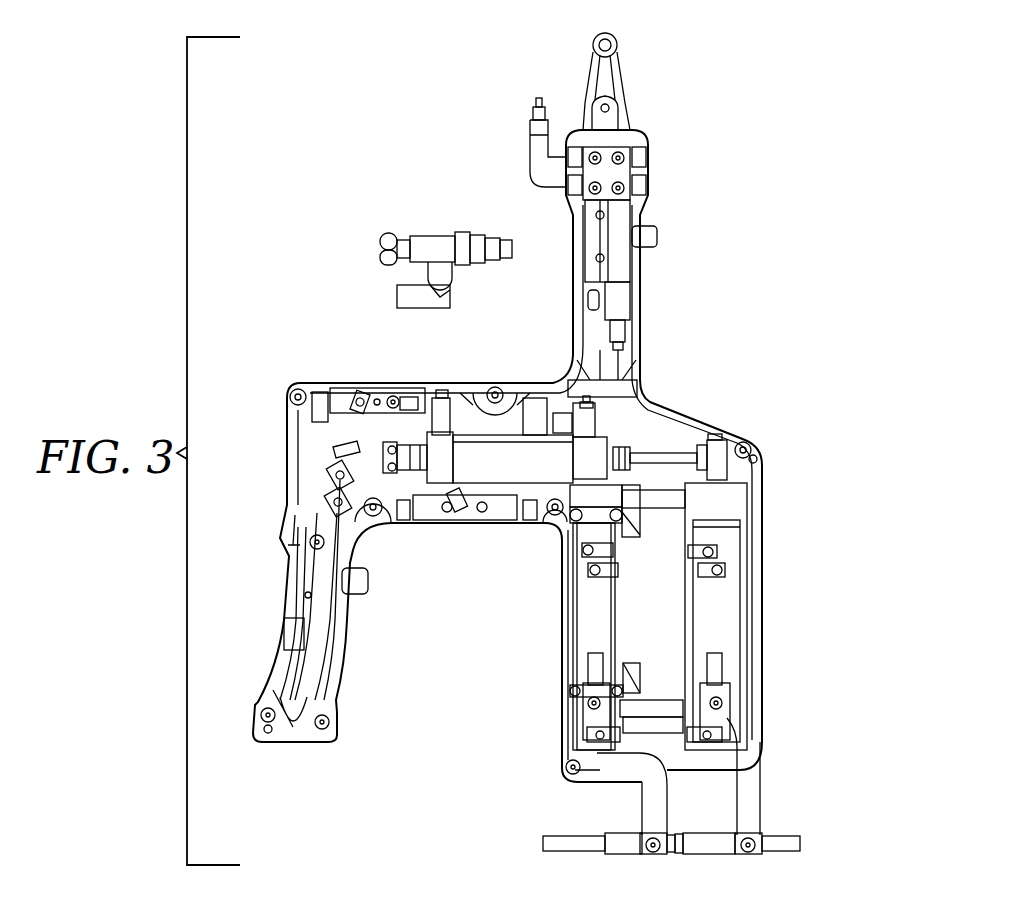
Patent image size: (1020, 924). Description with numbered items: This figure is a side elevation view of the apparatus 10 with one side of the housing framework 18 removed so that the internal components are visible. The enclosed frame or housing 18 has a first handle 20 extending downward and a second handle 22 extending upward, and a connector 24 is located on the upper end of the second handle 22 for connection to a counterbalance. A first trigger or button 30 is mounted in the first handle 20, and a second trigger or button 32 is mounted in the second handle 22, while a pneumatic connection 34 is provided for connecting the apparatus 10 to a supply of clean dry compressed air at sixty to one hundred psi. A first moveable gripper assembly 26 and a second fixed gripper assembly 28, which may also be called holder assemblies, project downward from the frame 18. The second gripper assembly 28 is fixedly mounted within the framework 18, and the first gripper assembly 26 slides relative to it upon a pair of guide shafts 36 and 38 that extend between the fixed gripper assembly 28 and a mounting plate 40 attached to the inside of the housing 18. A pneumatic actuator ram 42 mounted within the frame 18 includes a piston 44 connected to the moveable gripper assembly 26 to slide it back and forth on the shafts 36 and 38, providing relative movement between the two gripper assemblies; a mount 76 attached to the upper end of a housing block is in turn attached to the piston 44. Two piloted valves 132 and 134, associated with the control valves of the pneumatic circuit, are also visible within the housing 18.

The apparatus 10 is at (720, 126).
The frame or housing 18 is at (312, 386).
The first handle 20 is at (283, 628).
The second handle 22 is at (642, 273).
The connector 24 is at (622, 72).
The first moveable gripper assembly 26 is at (761, 789).
The second fixed gripper assembly 28 is at (641, 811).
The first trigger or button 30 is at (358, 583).
The second trigger or button 32 is at (658, 236).
The pneumatic connection 34 is at (528, 160).
The guide shaft 36 is at (664, 457).
The guide shaft 38 is at (645, 702).
The mounting plate 40 is at (754, 586).
The pneumatic actuator ram 42 is at (508, 470).
The piston 44 is at (660, 496).
The mount 76 is at (733, 444).
The piloted valve 132 is at (382, 393).
The piloted valve 134 is at (422, 512).